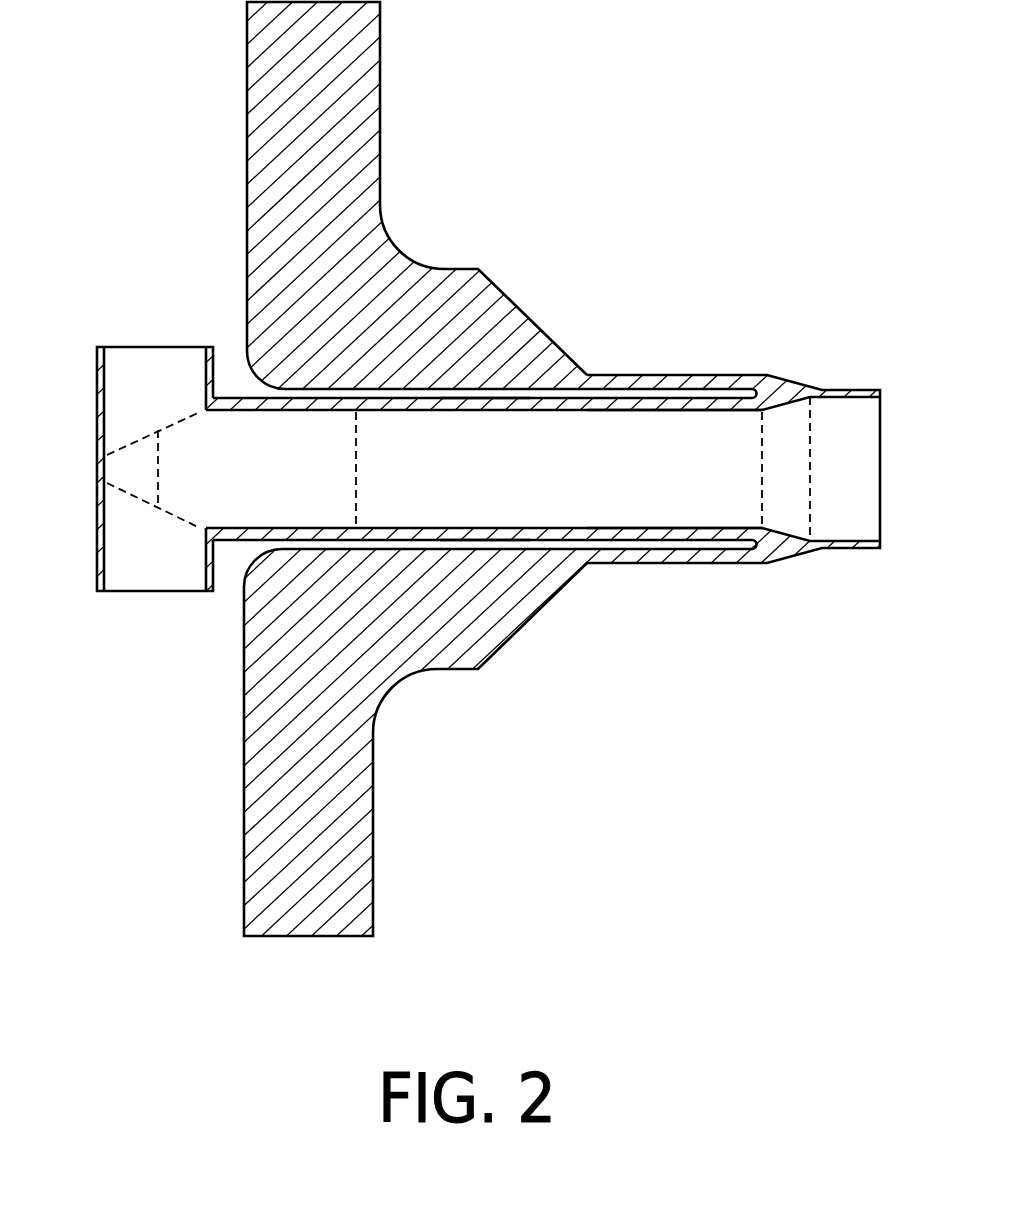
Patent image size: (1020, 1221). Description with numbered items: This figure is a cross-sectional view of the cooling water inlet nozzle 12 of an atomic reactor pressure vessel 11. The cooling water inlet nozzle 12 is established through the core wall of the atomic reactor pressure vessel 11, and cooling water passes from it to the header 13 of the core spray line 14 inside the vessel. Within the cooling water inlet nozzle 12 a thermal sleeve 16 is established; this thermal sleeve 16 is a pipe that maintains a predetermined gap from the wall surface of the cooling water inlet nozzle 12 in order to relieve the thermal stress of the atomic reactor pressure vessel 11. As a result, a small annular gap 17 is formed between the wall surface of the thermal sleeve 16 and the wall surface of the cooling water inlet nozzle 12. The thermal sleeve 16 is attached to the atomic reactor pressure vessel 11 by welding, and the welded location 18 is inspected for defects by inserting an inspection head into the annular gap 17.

The atomic reactor pressure vessel 11 is at (340, 85).
The cooling water inlet nozzle 12 is at (657, 300).
The header 13 is at (208, 489).
The core spray line 14 is at (135, 386).
The thermal sleeve 16 is at (459, 410).
The annular gap 17 is at (713, 395).
The welded location 18 is at (640, 406).